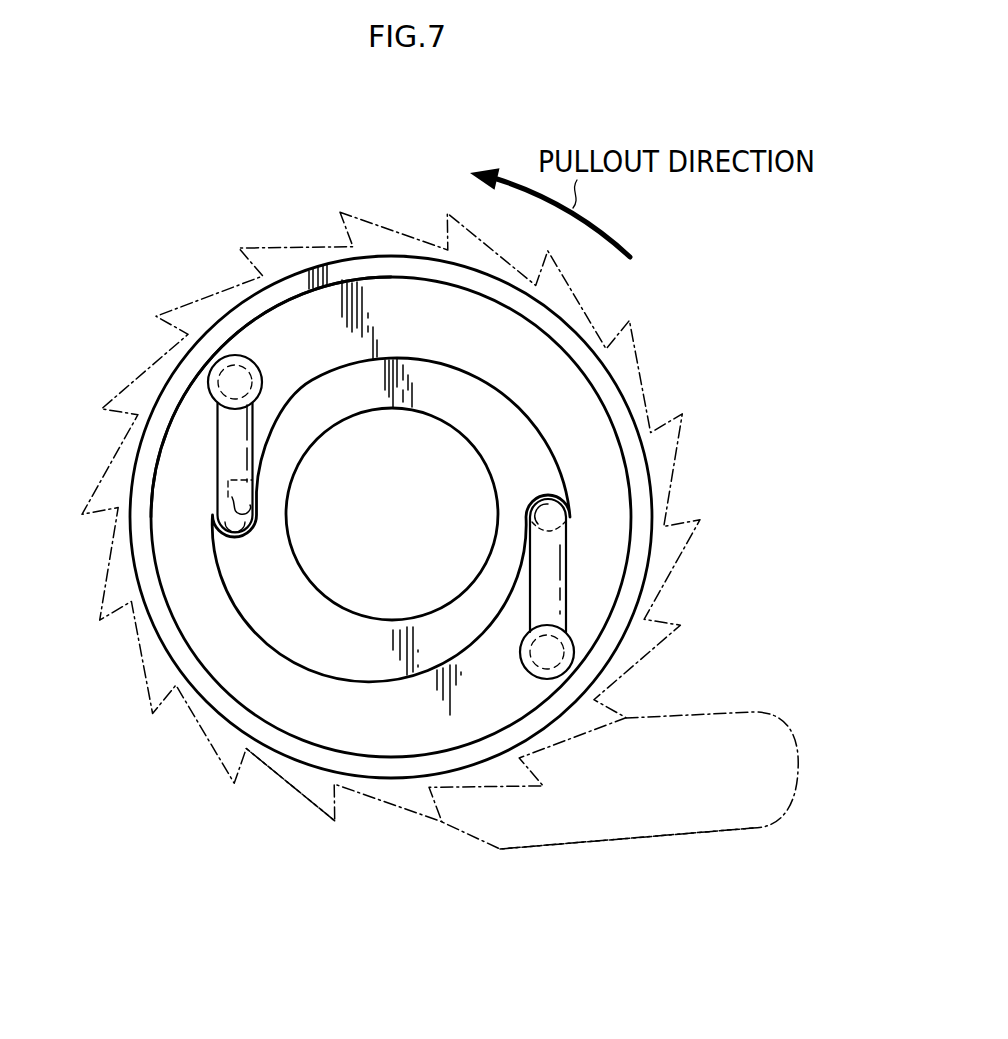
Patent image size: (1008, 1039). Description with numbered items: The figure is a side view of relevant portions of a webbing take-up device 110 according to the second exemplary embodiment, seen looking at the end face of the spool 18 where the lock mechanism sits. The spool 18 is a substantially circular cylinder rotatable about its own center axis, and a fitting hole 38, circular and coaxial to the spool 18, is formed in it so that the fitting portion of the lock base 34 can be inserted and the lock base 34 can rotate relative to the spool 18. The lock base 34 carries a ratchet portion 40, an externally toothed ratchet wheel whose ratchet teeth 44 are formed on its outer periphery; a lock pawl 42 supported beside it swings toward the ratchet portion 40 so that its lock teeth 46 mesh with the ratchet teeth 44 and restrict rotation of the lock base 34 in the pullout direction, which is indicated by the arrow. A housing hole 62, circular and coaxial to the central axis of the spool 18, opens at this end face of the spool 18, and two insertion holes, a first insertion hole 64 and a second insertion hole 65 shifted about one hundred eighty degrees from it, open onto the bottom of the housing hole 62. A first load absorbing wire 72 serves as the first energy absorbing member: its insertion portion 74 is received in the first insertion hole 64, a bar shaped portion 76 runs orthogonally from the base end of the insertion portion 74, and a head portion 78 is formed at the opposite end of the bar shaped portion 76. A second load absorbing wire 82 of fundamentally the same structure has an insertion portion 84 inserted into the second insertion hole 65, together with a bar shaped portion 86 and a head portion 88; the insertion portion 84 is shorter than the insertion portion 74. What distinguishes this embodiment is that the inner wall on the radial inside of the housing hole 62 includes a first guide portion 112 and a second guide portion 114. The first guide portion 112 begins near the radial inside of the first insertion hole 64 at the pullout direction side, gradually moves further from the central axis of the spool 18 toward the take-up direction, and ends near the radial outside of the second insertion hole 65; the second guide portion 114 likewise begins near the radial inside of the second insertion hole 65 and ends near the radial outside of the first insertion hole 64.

The webbing take-up device 110 is at (678, 336).
The first guide portion 112 is at (440, 362).
The second guide portion 114 is at (425, 683).
The head portion 78 is at (260, 364).
The bar shaped portion 76 is at (252, 431).
The insertion portion 74 is at (252, 480).
The first load absorbing wire 72 is at (208, 464).
The first insertion hole 64 is at (256, 514).
The second insertion hole 65 is at (527, 518).
The insertion portion 84 is at (568, 524).
The second load absorbing wire 82 is at (572, 560).
The bar shaped portion 86 is at (552, 583).
The head portion 88 is at (505, 672).
The fitting hole 38 is at (368, 617).
The spool 18 is at (195, 692).
The ratchet portion 40 is at (220, 742).
The lock base 34 is at (271, 397).
The housing hole 62 is at (301, 722).
The ratchet teeth 44 is at (318, 818).
The lock teeth 46 is at (619, 867).
The lock pawl 42 is at (713, 712).